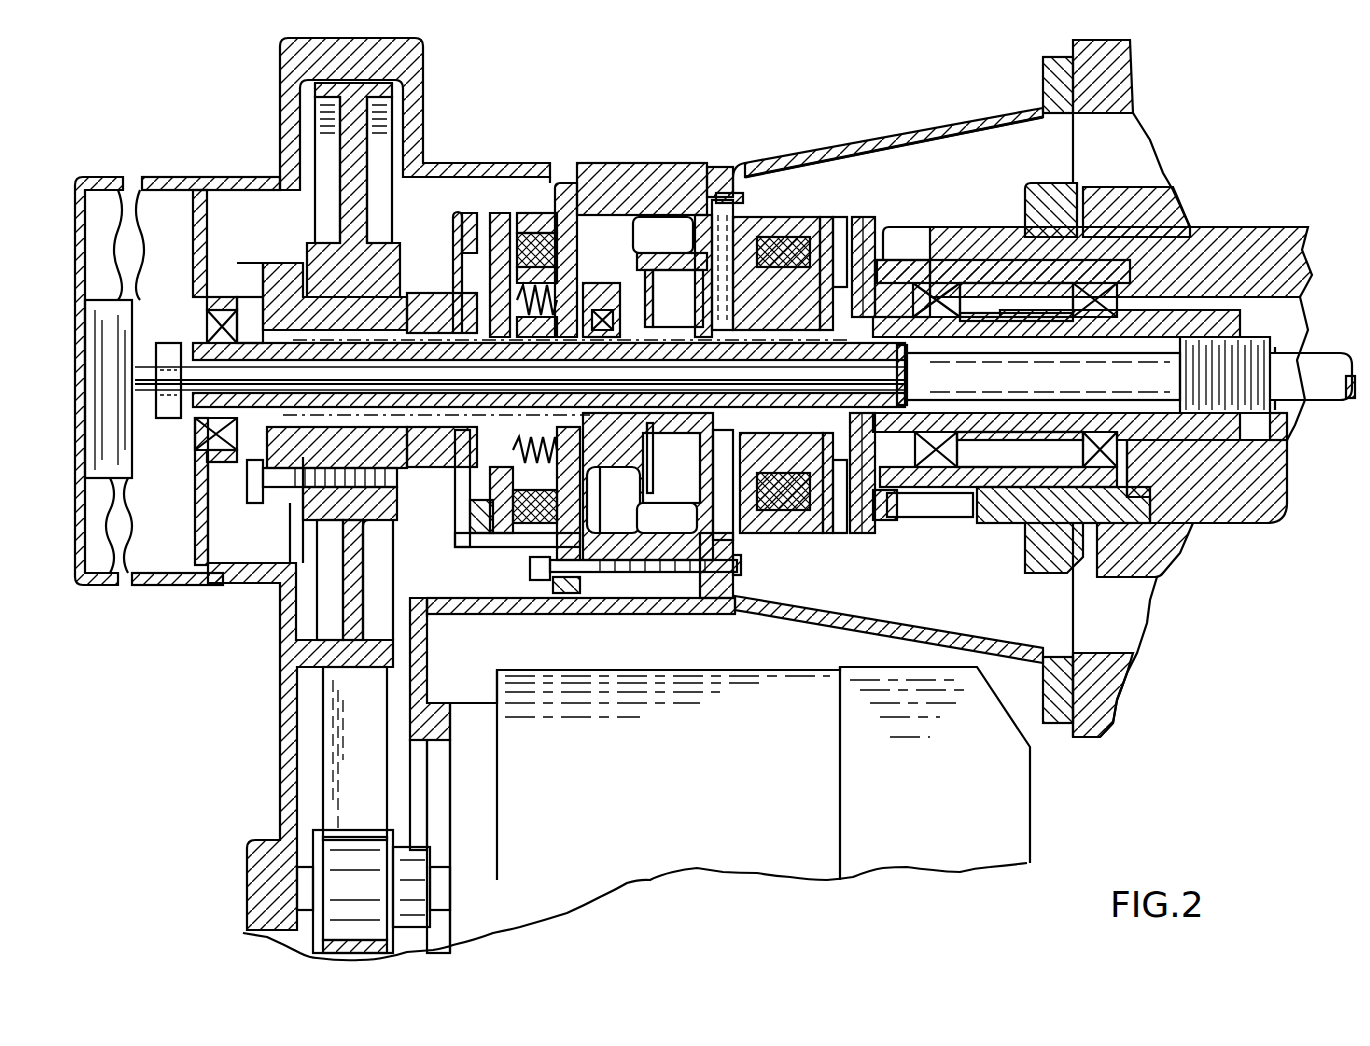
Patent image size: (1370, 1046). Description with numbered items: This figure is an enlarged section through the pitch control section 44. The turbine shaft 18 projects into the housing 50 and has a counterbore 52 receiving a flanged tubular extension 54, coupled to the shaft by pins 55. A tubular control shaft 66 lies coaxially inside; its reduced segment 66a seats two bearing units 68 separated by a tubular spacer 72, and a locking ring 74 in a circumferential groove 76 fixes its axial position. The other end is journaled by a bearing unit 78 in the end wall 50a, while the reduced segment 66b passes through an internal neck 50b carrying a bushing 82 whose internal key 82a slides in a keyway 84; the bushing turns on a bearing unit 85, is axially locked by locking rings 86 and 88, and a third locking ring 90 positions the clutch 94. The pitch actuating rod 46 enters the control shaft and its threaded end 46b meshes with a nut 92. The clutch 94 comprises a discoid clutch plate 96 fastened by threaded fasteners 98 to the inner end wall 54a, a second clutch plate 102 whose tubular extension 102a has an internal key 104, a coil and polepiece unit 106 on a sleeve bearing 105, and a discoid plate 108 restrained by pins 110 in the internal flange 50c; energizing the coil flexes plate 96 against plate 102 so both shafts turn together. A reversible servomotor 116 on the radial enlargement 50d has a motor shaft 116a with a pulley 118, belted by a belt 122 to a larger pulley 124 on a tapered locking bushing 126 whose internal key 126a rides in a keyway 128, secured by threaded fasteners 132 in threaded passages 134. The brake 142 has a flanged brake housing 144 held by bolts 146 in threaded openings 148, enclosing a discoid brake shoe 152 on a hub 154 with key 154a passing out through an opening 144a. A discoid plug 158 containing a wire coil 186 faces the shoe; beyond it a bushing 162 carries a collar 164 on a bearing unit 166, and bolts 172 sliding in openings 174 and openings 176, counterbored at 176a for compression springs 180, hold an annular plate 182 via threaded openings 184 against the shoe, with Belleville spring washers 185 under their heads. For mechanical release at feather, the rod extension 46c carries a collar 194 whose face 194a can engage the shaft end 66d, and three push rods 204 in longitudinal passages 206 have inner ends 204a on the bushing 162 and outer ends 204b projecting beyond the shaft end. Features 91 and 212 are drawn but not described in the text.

The shaft 18 is at (1282, 228).
The pitch control section 44 is at (745, 85).
The pitch actuating rod 46 is at (1345, 355).
The externally threaded end 46b is at (1290, 410).
The extension 46c is at (348, 370).
The housing 50 is at (945, 130).
The end wall 50a is at (200, 185).
The internal neck 50b is at (703, 230).
The internal flange 50c is at (717, 190).
The radial enlargement 50d is at (425, 652).
The counterbore 52 is at (990, 495).
The flanged tubular extension 54 is at (1003, 373).
The inner end wall 54a is at (893, 265).
The pins 55 is at (905, 512).
The tubular control shaft 66 is at (1150, 432).
The reduced diameter segment 66a is at (959, 449).
The reduced diameter segment 66b is at (820, 525).
The shaft end 66d is at (203, 312).
The bearing unit 68 is at (1105, 410).
The tubular spacer 72 is at (1037, 449).
The locking ring 74 is at (955, 302).
The circumferential groove 76 is at (935, 360).
The bearing unit 78 is at (230, 312).
The bushing 82 is at (648, 325).
The internal key 82a is at (658, 315).
The longitudinal keyway 84 is at (907, 365).
The bearing unit 85 is at (680, 272).
The locking ring 86 is at (655, 433).
The locking ring 88 is at (648, 486).
The locking ring 90 is at (620, 285).
The bearing 91 is at (613, 310).
The nut 92 is at (1285, 425).
The clutch 94 is at (766, 178).
The discoid clutch plate 96 is at (862, 225).
The threaded fasteners 98 is at (857, 535).
The second clutch plate 102 is at (832, 215).
The tubular extension 102a is at (800, 500).
The internal key 104 is at (760, 290).
The sleeve bearing 105 is at (775, 308).
The electromagnetic toroidal wire coil and polepiece unit 106 is at (765, 530).
The discoid plate 108 is at (743, 208).
The pins 110 is at (720, 197).
The reversible servomotor 116 is at (647, 794).
The motor shaft 116a is at (440, 885).
The pulley 118 is at (310, 920).
The belt 122 is at (330, 777).
The pulley 124 is at (327, 652).
The tapered locking bushing 126 is at (265, 512).
The internal key 126a is at (320, 345).
The keyway 128 is at (258, 300).
The threaded fasteners 132 is at (258, 492).
The threaded passages 134 is at (430, 575).
The brake 142 is at (530, 185).
The flanged brake housing 144 is at (553, 195).
The opening 144a is at (433, 545).
The bolts 146 is at (645, 612).
The threaded openings 148 is at (700, 580).
The discoid brake shoe 152 is at (458, 232).
The hub 154 is at (440, 292).
The key 154a is at (442, 313).
The discoid plug 158 is at (536, 186).
The bushing 162 is at (590, 480).
The collar 164 is at (640, 515).
The bearing unit 166 is at (600, 480).
The bolts 172 is at (653, 455).
The openings 174 is at (600, 566).
The openings 176 is at (560, 582).
The counterbores 176a is at (520, 545).
The compression springs 180 is at (475, 443).
The annular plate 182 is at (512, 225).
The threaded openings 184 is at (437, 520).
The Belleville spring washers 185 is at (765, 553).
The wire coil 186 is at (597, 215).
The collar 194 is at (160, 360).
The collar face 194a is at (165, 350).
The push rods 204 is at (200, 450).
The inner ends 204a is at (436, 418).
The outer ends 204b is at (200, 428).
The longitudinal passages 206 is at (205, 470).
The end cap 212 is at (177, 381).